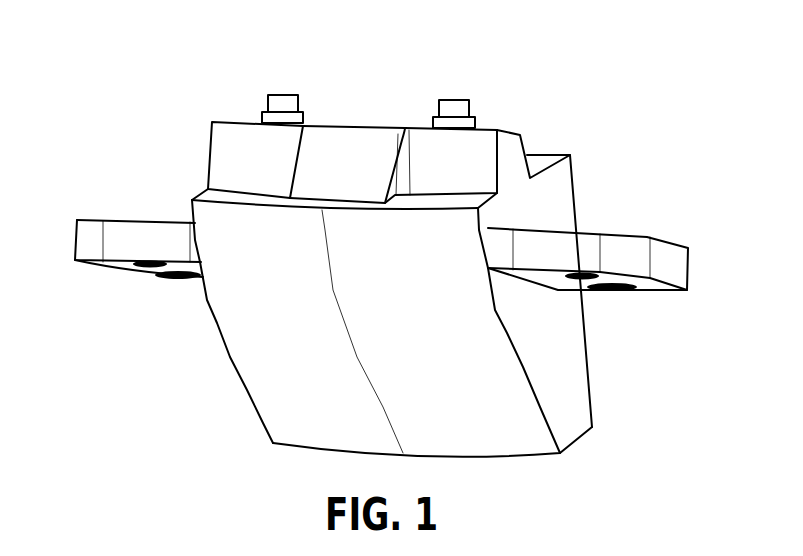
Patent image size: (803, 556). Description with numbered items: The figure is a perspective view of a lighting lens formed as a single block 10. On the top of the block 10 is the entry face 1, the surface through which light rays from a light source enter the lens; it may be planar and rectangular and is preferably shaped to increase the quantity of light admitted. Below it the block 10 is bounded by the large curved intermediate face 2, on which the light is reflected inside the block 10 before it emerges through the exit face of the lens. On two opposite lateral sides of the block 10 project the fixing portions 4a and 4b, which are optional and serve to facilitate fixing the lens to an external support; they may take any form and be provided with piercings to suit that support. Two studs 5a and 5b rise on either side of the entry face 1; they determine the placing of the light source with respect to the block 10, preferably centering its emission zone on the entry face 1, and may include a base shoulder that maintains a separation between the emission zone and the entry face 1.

The block 10 is at (613, 150).
The entry face 1 is at (372, 127).
The intermediate face 2 is at (273, 368).
The portion for fixing the lighting lens 4a is at (135, 233).
The portion for fixing the lighting lens 4b is at (667, 258).
The stud 5a is at (283, 102).
The stud 5b is at (457, 108).